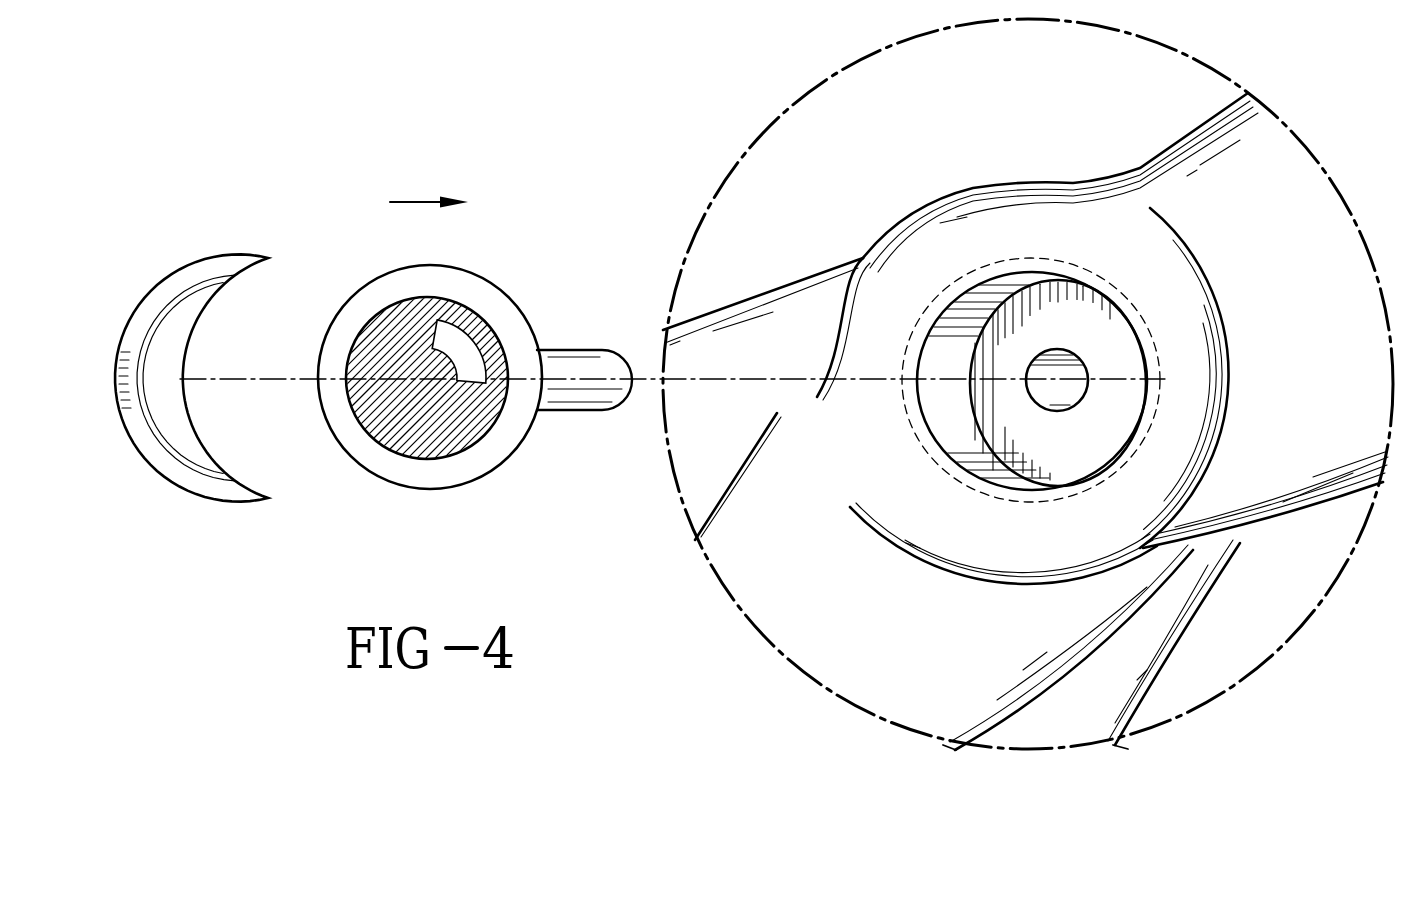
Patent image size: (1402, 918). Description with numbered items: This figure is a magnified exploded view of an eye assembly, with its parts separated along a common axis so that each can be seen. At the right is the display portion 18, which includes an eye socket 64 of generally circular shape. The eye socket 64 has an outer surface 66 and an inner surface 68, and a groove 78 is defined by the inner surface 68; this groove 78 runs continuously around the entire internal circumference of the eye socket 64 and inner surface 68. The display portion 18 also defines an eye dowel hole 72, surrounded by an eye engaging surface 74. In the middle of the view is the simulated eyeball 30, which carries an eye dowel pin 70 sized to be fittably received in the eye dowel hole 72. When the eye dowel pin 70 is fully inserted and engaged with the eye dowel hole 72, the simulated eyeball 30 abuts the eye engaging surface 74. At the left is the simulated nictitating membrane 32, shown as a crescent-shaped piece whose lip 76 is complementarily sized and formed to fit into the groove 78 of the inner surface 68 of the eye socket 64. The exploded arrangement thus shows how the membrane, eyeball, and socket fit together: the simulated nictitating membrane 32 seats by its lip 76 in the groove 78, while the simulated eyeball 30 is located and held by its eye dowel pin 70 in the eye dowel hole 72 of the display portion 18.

The display portion 18 is at (810, 240).
The simulated eyeball 30 is at (422, 475).
The simulated nictitating membrane 32 is at (165, 422).
The eye socket 64 is at (918, 238).
The outer surface 66 is at (1223, 393).
The inner surface 68 is at (1153, 373).
The eye dowel pin 70 is at (580, 347).
The eye dowel hole 72 is at (1068, 392).
The eye engaging surface 74 is at (1117, 342).
The lip 76 is at (170, 282).
The groove 78 is at (1152, 406).